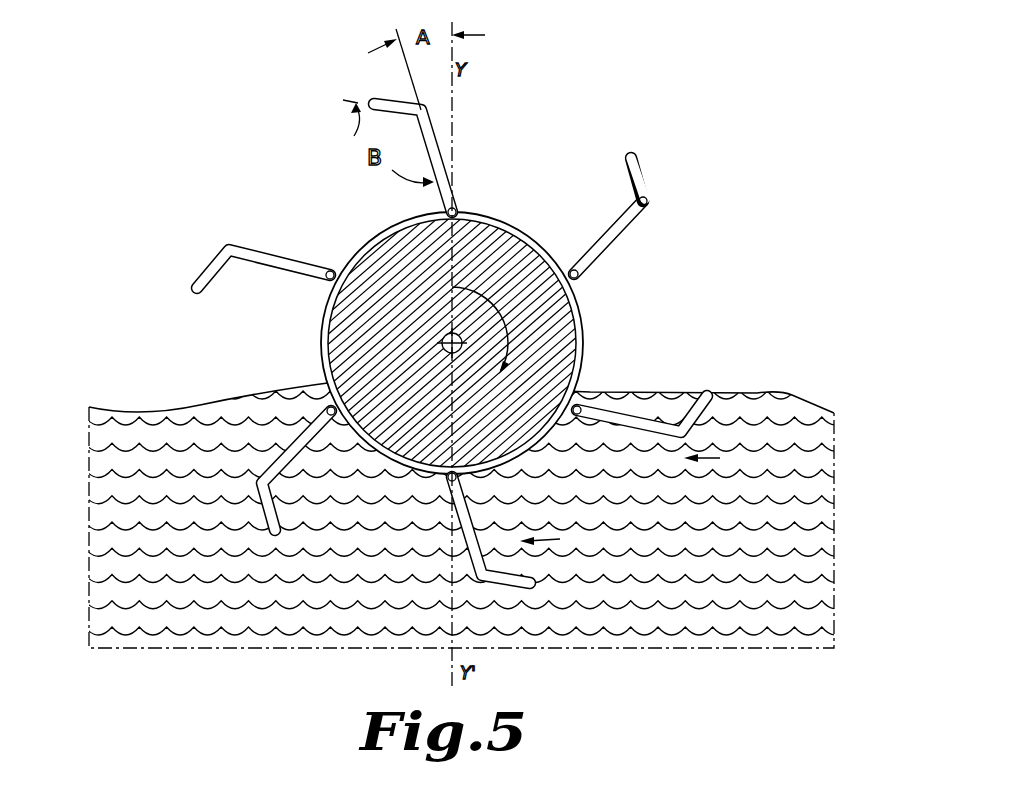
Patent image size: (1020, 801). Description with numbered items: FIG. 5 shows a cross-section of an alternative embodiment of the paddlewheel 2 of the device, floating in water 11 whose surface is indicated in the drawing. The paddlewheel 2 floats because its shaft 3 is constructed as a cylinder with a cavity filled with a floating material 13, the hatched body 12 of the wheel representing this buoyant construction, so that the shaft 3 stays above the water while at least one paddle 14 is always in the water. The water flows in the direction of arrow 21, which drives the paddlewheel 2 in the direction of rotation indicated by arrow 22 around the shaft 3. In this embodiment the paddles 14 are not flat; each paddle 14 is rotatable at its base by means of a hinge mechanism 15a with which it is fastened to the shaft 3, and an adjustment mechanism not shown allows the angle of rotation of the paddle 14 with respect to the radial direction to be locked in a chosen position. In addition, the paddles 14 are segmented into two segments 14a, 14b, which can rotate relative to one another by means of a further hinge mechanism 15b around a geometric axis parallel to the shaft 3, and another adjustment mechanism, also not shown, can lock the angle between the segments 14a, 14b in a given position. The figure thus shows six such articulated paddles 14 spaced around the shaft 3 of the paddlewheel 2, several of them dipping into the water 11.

The paddlewheel 2 is at (471, 303).
The shaft 3 is at (440, 339).
The water 11 is at (135, 510).
The wheel body 12 is at (368, 275).
The floating material 13 is at (463, 238).
The paddles 14 is at (647, 185).
The first paddle segment 14a is at (606, 248).
The second paddle segment 14b is at (648, 187).
The hinge mechanism 15a is at (572, 266).
The hinge mechanism 15b is at (638, 200).
The arrow 21 is at (560, 539).
The arrow 22 is at (512, 340).